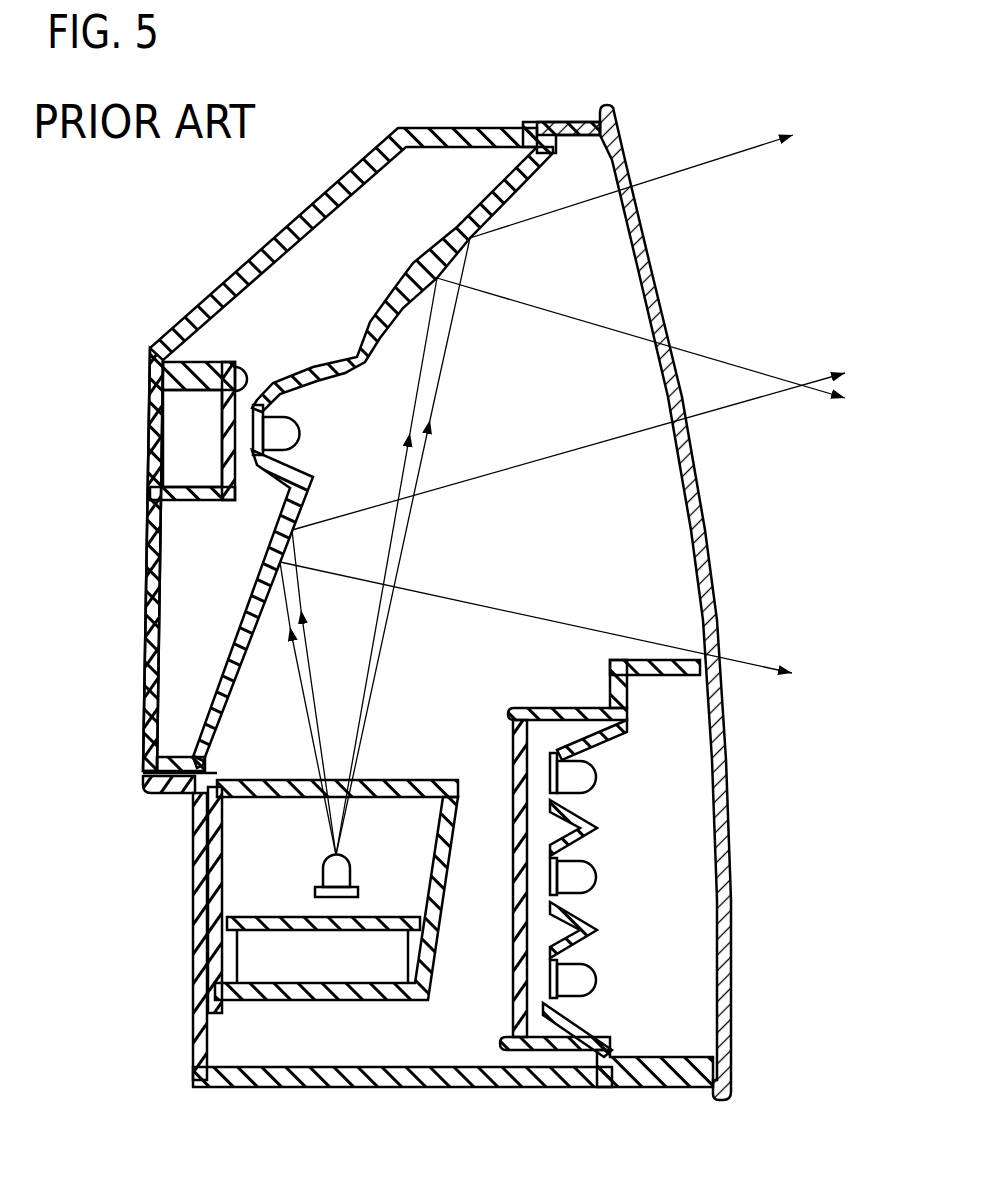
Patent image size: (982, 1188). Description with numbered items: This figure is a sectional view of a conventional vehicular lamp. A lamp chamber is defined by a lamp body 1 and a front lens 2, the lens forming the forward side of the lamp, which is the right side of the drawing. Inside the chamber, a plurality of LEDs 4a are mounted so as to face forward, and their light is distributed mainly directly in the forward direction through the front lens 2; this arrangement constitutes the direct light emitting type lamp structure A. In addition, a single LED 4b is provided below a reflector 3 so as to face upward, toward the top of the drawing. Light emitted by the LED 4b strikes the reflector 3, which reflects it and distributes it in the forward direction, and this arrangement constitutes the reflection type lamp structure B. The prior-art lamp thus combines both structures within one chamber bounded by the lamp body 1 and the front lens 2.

The lamp body 1 is at (142, 622).
The front lens 2 is at (708, 552).
The reflector 3 is at (407, 283).
The LEDs 4a is at (596, 777).
The LED 4b is at (323, 873).
The direct light emitting type lamp structure A is at (600, 750).
The reflection type lamp structure B is at (477, 277).